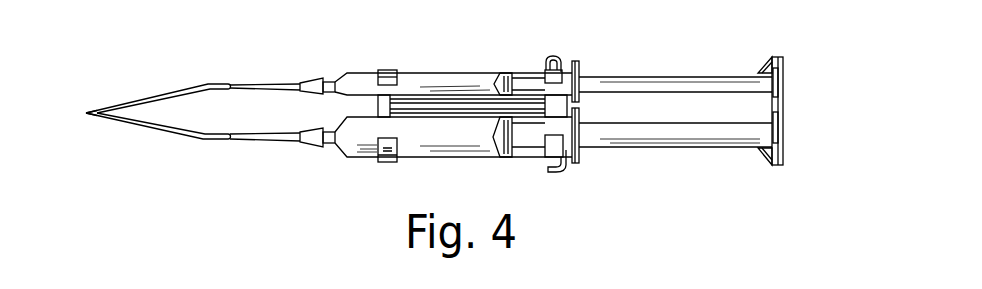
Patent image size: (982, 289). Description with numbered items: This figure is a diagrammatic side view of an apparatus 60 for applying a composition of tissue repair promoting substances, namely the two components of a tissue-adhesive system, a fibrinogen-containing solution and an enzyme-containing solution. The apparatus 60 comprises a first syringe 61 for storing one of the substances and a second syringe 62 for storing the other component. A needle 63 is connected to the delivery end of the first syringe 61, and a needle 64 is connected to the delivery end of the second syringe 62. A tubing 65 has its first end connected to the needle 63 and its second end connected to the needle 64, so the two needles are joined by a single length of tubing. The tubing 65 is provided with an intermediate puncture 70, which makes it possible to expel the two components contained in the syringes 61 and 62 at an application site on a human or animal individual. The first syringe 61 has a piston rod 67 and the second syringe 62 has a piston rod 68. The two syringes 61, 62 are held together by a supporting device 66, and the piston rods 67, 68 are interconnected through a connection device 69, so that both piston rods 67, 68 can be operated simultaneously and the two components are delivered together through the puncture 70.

The apparatus 60 is at (513, 66).
The first syringe 61 is at (462, 80).
The second syringe 62 is at (466, 150).
The needle 63 is at (273, 84).
The needle 64 is at (270, 141).
The tubing 65 is at (178, 128).
The supporting device 66 is at (392, 70).
The piston rod 67 is at (673, 78).
The piston rod 68 is at (663, 147).
The connection device 69 is at (786, 100).
The puncture 70 is at (86, 118).